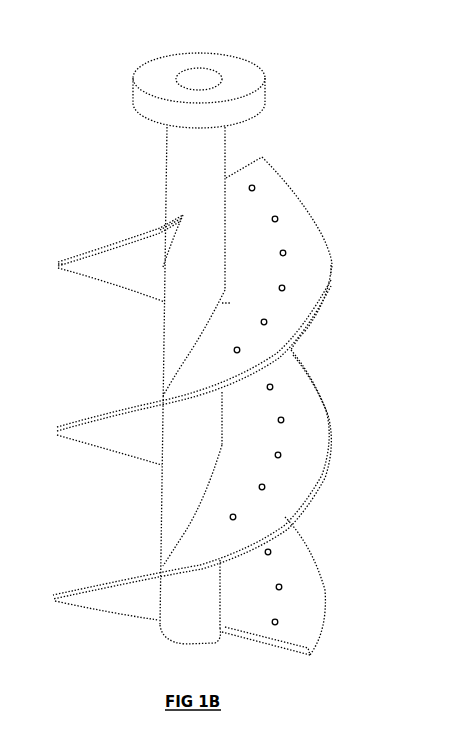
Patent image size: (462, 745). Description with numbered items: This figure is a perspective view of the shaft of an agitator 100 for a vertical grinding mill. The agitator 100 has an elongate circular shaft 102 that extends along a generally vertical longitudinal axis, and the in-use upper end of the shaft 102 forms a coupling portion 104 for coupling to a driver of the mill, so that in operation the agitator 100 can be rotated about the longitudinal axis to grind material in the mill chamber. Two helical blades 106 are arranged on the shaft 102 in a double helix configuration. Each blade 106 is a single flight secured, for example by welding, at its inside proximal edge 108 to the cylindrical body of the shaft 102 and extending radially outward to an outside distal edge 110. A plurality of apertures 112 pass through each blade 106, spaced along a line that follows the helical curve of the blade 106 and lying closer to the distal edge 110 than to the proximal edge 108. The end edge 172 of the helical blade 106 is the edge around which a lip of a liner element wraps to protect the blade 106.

The agitator 100 is at (272, 80).
The shaft 102 is at (96, 148).
The coupling portion 104 is at (206, 78).
The helical blade 106 is at (85, 258).
The proximal edge 108 is at (163, 263).
The distal edge 110 is at (80, 268).
The apertures 112 is at (264, 322).
The end edge 172 is at (246, 628).